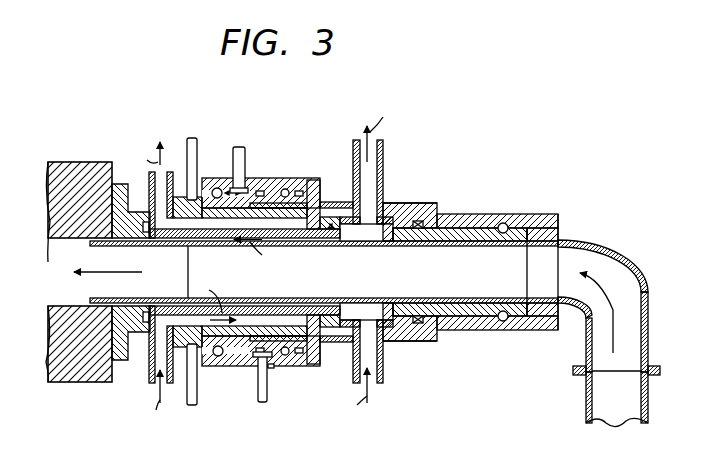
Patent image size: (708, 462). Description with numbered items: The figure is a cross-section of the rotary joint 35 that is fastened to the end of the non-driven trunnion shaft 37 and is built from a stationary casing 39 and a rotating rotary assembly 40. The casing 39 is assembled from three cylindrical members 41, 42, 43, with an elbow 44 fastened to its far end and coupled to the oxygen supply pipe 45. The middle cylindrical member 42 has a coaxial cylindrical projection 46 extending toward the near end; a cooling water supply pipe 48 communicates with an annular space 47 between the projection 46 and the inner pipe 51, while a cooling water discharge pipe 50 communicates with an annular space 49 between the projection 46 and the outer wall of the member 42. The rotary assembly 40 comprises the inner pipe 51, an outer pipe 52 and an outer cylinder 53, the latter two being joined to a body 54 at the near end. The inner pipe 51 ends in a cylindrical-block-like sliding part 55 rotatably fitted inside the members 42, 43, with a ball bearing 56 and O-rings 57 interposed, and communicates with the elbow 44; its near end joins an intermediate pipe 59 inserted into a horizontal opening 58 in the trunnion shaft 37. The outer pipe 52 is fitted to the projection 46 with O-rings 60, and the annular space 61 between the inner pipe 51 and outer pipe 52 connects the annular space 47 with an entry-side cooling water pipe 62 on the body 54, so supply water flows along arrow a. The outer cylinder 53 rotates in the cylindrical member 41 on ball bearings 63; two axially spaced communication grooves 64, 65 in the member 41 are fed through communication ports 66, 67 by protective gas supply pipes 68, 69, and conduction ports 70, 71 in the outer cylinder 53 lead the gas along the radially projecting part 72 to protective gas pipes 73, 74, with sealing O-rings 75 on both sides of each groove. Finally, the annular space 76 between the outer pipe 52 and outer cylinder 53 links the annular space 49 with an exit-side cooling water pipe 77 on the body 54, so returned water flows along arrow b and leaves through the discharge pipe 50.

The rotary joint 35 is at (419, 360).
The non-driven trunnion shaft 37 is at (73, 370).
The casing 39 is at (416, 200).
The rotary assembly 40 is at (313, 182).
The cylindrical member 41 is at (293, 365).
The middle cylindrical member 42 is at (330, 345).
The cylindrical member 43 is at (493, 332).
The elbow 44 is at (586, 350).
The oxygen supply pipe 45 is at (586, 410).
The cylindrical projection 46 is at (392, 215).
The annular space 47 is at (368, 296).
The cooling water supply pipe 48 is at (383, 372).
The annular space 49 is at (381, 185).
The cooling water discharge pipe 50 is at (355, 160).
The inner pipe 51 is at (372, 244).
The outer pipe 52 is at (306, 236).
The outer cylinder 53 is at (202, 236).
The body 54 is at (132, 362).
The sliding part 55 is at (457, 305).
The ball bearing 56 is at (503, 222).
The O-rings 57 is at (418, 222).
The horizontal opening 58 is at (66, 288).
The intermediate pipe 59 is at (92, 256).
The O-rings 60 is at (333, 220).
The annular space 61 is at (326, 228).
The entry-side cooling water pipe 62 is at (150, 185).
The ball bearings 63 is at (215, 188).
The communication groove 64 is at (240, 370).
The communication groove 65 is at (270, 368).
The communication port 66 is at (246, 190).
The communication port 67 is at (256, 378).
The protective gas supply pipe 68 is at (238, 150).
The protective gas supply pipe 69 is at (266, 402).
The conduction port 70 is at (228, 216).
The conduction port 71 is at (242, 338).
The radially projecting part 72 is at (170, 385).
The protective gas pipe 73 is at (187, 160).
The protective gas pipe 74 is at (192, 405).
The sealing O-rings 75 is at (306, 370).
The annular space 76 is at (288, 232).
The exit-side cooling water pipe 77 is at (150, 370).